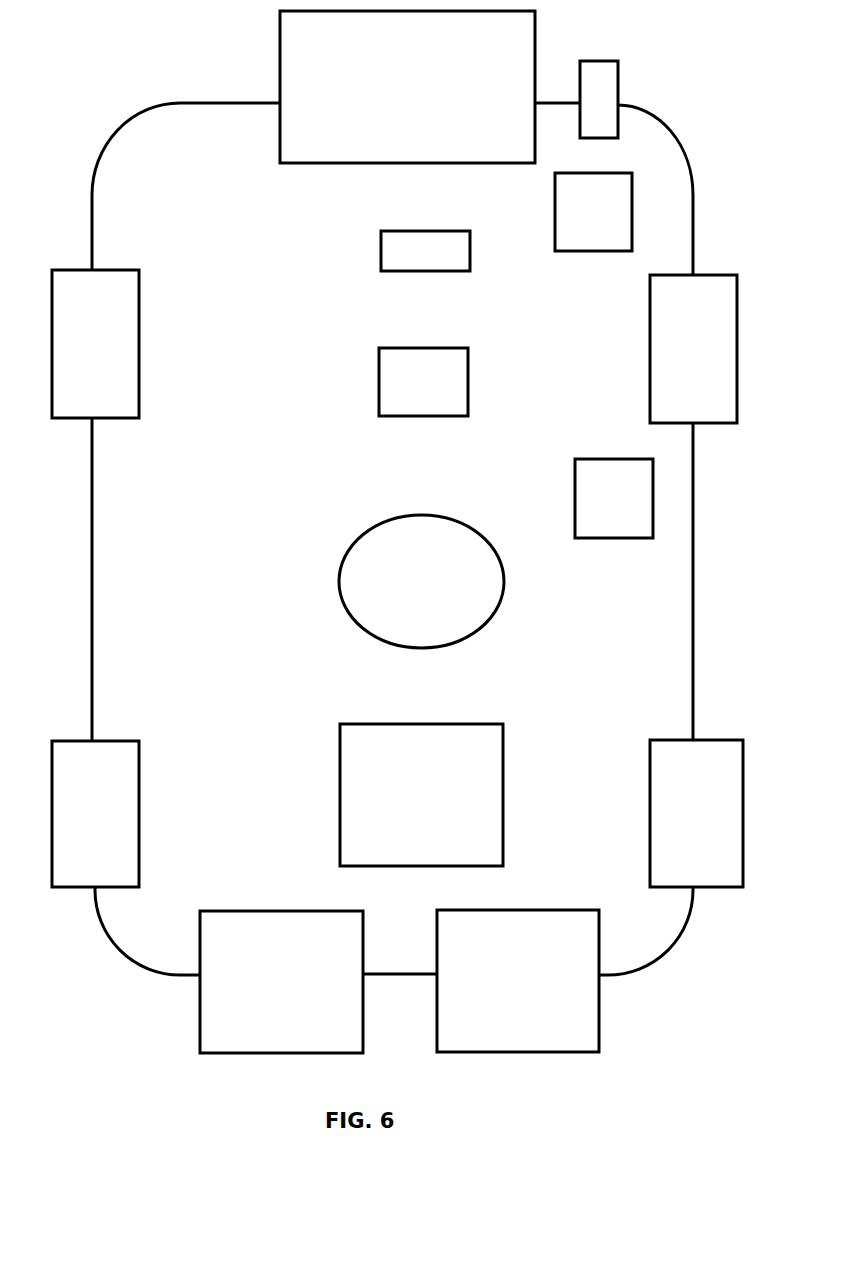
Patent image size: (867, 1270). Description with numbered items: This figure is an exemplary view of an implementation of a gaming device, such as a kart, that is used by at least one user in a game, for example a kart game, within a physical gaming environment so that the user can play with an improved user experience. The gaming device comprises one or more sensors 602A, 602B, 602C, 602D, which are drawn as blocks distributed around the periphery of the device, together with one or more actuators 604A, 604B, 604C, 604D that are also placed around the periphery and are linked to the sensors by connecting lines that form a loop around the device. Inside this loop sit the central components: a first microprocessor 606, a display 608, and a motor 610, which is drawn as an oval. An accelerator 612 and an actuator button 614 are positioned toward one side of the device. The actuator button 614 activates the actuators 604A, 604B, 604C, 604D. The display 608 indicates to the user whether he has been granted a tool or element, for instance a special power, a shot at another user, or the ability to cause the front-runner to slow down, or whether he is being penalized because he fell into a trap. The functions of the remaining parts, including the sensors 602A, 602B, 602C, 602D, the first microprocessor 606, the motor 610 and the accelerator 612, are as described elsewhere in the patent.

The sensor 602A is at (256, 993).
The sensor 602B is at (70, 826).
The sensor 602C is at (672, 826).
The sensor 602D is at (400, 262).
The actuator 604A is at (382, 99).
The actuator 604B is at (70, 356).
The actuator 604C is at (493, 993).
The actuator 604D is at (668, 361).
The first microprocessor 606 is at (403, 806).
The display 608 is at (405, 392).
The motor 610 is at (403, 593).
The accelerator 612 is at (575, 224).
The actuator button 614 is at (596, 509).